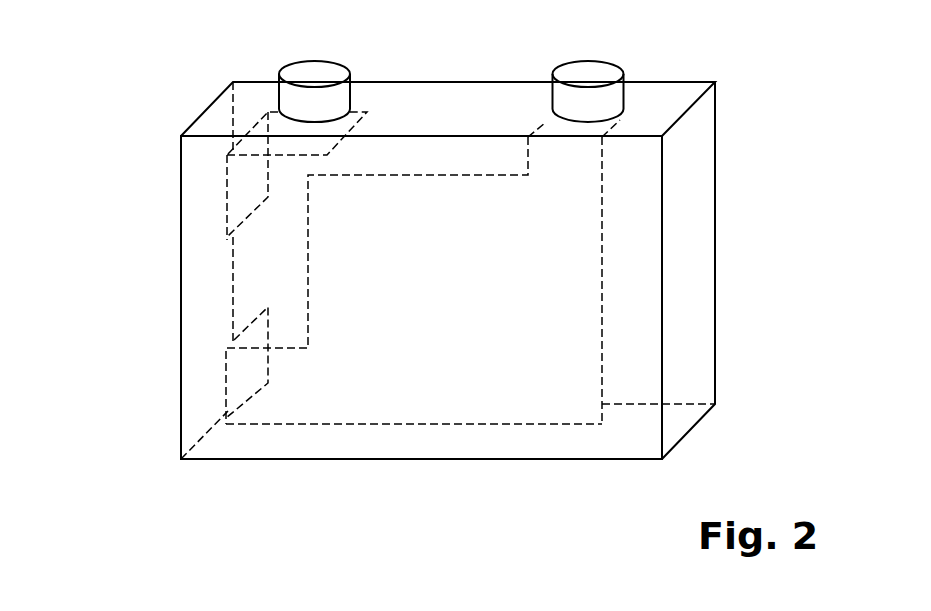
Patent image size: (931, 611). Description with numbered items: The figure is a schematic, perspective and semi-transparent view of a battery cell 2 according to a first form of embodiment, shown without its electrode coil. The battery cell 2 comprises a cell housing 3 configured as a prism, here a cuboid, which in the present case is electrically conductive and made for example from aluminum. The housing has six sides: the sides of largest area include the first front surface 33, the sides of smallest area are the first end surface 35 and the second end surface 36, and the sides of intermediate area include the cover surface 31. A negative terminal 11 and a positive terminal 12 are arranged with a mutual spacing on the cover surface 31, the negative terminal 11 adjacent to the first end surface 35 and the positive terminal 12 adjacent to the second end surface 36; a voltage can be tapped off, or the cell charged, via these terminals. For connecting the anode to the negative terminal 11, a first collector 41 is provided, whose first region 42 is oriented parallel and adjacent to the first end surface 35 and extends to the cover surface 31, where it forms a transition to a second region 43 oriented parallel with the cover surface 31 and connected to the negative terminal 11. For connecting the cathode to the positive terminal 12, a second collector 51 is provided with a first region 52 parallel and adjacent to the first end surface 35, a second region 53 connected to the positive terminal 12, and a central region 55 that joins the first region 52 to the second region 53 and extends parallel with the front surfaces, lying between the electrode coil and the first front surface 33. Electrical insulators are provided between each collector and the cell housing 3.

The battery cell 2 is at (134, 84).
The cell housing 3 is at (670, 88).
The negative terminal 11 is at (313, 67).
The positive terminal 12 is at (585, 62).
The cover surface 31 is at (405, 97).
The first front surface 33 is at (637, 338).
The first end surface 35 is at (170, 160).
The second end surface 36 is at (706, 146).
The first collector 41 is at (227, 187).
The first region of the first collector 42 is at (227, 215).
The second region of the first collector 43 is at (262, 128).
The second collector 51 is at (437, 410).
The first region of the second collector 52 is at (225, 377).
The second region of the second collector 53 is at (545, 108).
The central region of the second collector 55 is at (489, 410).